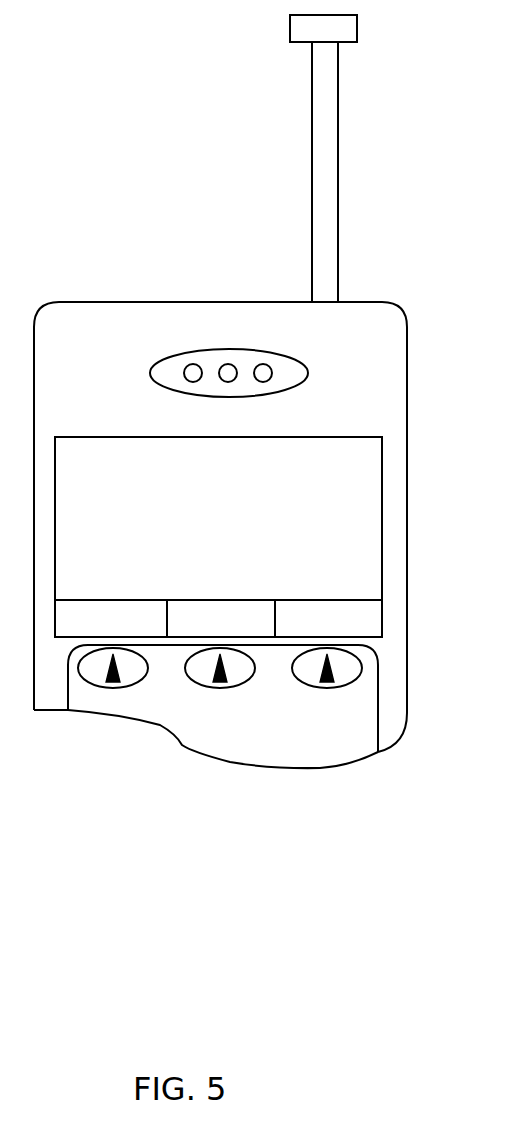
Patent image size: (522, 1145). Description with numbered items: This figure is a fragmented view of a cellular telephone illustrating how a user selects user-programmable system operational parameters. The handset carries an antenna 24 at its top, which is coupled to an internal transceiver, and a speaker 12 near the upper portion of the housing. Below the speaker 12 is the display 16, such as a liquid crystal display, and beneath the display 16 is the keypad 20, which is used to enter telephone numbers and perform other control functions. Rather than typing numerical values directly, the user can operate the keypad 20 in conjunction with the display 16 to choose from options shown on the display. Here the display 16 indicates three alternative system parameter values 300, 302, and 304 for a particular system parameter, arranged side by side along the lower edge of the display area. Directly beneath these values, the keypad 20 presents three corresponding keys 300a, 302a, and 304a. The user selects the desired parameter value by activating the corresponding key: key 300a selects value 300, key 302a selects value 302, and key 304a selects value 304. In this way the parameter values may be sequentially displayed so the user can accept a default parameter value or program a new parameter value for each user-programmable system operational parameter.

The antenna 24 is at (338, 186).
The speaker 12 is at (308, 370).
The display 16 is at (382, 500).
The keypad 20 is at (378, 703).
The system parameter value 300 is at (94, 600).
The system parameter value 302 is at (205, 600).
The system parameter value 304 is at (303, 600).
The key 300a is at (101, 688).
The key 302a is at (218, 690).
The key 304a is at (327, 690).